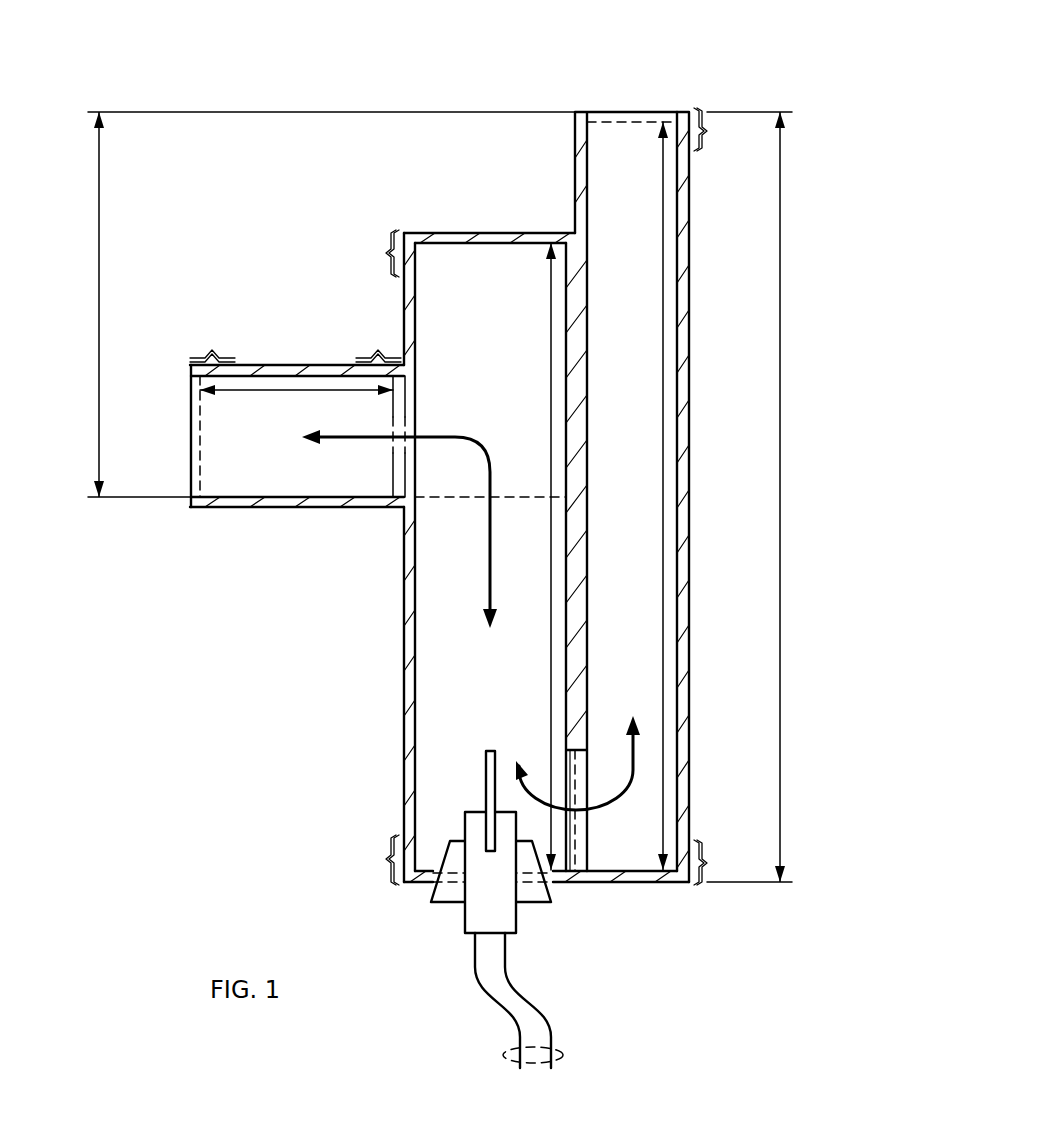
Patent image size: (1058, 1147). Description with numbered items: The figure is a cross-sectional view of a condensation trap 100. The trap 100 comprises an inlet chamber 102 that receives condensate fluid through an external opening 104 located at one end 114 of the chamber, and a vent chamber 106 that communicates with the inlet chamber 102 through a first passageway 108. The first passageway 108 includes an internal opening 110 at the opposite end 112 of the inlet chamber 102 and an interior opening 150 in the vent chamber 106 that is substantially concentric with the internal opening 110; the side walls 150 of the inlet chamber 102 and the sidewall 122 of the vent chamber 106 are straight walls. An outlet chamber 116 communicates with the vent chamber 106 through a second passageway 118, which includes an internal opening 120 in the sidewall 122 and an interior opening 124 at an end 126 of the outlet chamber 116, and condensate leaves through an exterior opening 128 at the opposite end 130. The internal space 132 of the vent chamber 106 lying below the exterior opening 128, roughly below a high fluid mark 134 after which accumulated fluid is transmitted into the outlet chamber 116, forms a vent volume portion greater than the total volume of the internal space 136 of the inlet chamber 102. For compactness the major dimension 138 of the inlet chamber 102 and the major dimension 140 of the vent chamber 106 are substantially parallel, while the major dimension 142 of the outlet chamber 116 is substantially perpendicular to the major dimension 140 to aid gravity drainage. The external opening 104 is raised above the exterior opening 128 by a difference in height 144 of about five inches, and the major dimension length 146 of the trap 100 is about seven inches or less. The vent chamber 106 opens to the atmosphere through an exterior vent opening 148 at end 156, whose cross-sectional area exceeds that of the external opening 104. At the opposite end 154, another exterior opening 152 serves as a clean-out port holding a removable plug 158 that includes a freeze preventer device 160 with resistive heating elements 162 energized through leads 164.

The trap 100 is at (262, 64).
The inlet chamber 102 is at (603, 86).
The external opening 104 is at (640, 118).
The vent chamber 106 is at (418, 197).
The first passageway 108 is at (627, 724).
The internal opening 110 is at (581, 830).
The opposite end 112 is at (724, 862).
The end 114 is at (723, 129).
The outlet chamber 116 is at (286, 335).
The second passageway 118 is at (478, 437).
The internal opening 120 is at (416, 402).
The sidewall 122 is at (404, 738).
The interior opening 124 is at (393, 470).
The end 126 is at (378, 341).
The exterior opening 128 is at (190, 452).
The opposite end 130 is at (212, 341).
The internal space 132 is at (508, 295).
The high fluid mark 134 is at (468, 498).
The internal space 136 is at (648, 480).
The major dimension 138 is at (663, 292).
The major dimension 140 is at (551, 355).
The major dimension 142 is at (260, 395).
The difference in height 144 is at (99, 308).
The major dimension length 146 is at (780, 484).
The exterior vent opening 148 is at (527, 233).
The interior opening 150 is at (689, 372).
The exterior opening 152 is at (435, 882).
The opposite end 154 is at (369, 860).
The end 156 is at (371, 253).
The removable plug 158 is at (545, 893).
The freeze preventer device 160 is at (518, 922).
The resistive heating elements 162 is at (486, 775).
The leads 164 is at (565, 1056).